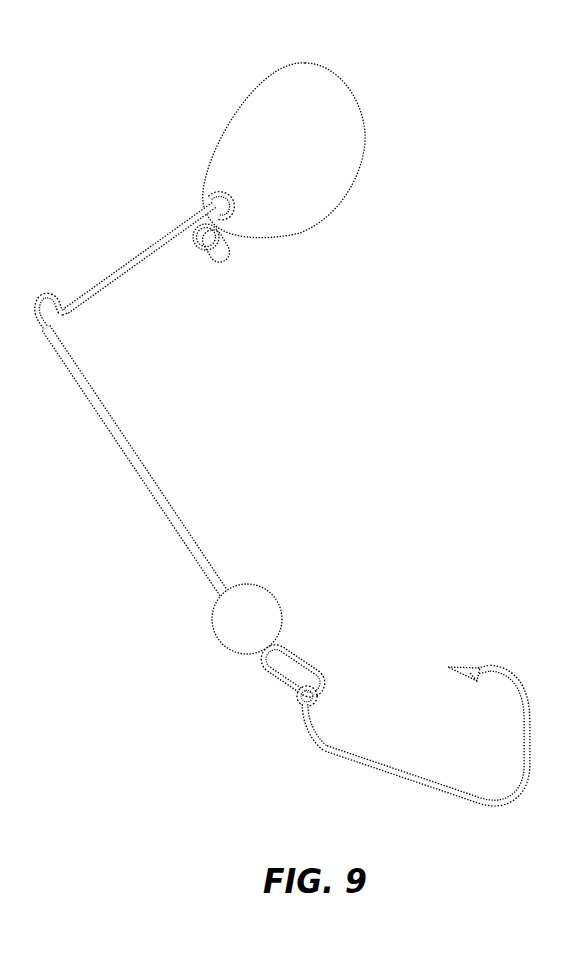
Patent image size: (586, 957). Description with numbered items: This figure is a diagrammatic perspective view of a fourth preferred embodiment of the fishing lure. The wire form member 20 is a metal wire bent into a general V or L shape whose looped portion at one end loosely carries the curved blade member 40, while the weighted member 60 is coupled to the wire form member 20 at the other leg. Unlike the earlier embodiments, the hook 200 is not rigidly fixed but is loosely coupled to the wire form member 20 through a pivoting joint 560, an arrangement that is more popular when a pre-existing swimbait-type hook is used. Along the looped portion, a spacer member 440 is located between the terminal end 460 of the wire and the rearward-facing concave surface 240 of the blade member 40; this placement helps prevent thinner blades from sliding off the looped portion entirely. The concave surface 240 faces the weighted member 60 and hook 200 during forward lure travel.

The wire form member 20 is at (103, 420).
The blade member 40 is at (317, 100).
The weighted member 60 is at (232, 633).
The hook 200 is at (448, 665).
The concave surface 240 is at (320, 195).
The spacer member 440 is at (202, 248).
The terminal end 460 is at (187, 230).
The pivoting joint 560 is at (337, 700).